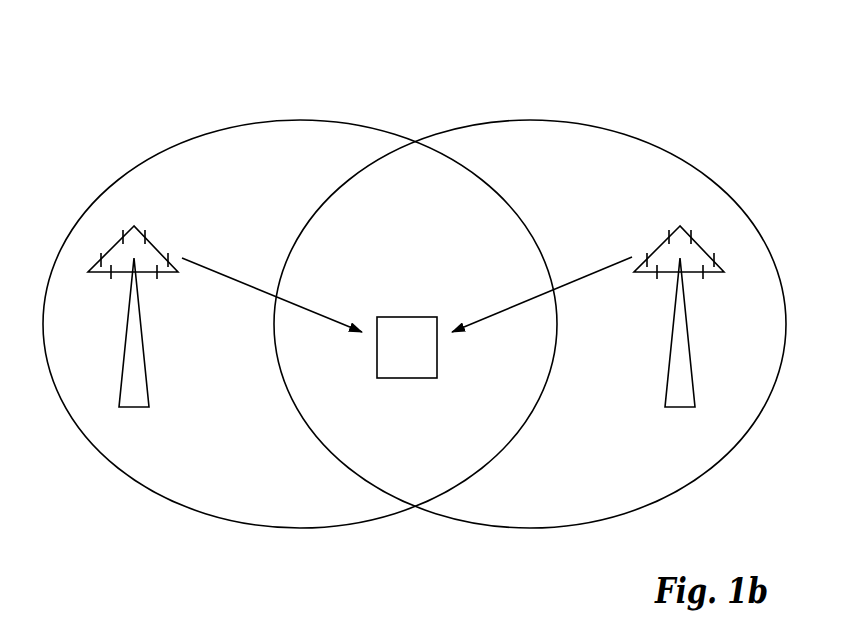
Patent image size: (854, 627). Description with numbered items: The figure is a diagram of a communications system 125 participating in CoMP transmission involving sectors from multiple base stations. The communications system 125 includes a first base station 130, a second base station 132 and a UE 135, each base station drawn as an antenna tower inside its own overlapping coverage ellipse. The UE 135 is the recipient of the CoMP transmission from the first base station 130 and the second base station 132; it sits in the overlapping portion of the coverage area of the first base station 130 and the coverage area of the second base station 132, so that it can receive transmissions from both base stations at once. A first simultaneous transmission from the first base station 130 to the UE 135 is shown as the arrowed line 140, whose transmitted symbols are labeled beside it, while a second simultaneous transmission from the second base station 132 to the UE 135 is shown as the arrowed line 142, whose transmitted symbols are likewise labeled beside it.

The communications system 125 is at (102, 80).
The first base station 130 is at (121, 378).
The second base station 132 is at (693, 380).
The UE 135 is at (407, 317).
The arrowed line 140 is at (290, 302).
The arrowed line 142 is at (522, 302).